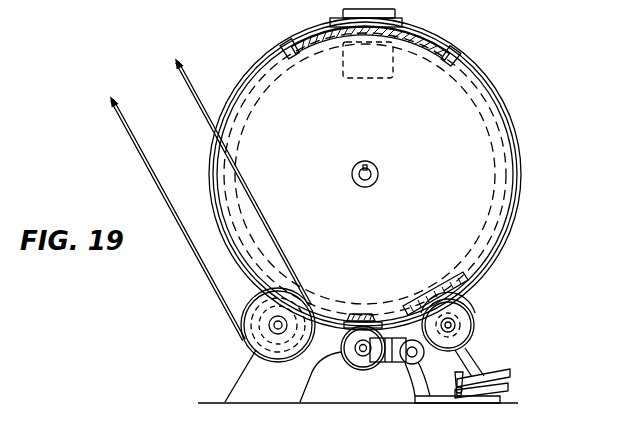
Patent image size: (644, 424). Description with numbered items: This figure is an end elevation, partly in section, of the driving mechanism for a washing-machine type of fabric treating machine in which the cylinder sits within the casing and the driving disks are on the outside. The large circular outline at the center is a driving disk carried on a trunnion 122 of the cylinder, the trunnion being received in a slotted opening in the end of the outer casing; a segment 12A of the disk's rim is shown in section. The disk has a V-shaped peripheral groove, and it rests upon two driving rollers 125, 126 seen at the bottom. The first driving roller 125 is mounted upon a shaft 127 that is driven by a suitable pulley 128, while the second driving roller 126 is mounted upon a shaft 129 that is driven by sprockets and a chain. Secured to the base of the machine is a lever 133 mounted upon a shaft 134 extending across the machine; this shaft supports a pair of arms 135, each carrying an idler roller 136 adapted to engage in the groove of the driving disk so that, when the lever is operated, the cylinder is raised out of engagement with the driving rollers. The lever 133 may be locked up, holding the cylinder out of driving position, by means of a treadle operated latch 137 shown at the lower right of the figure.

The brake band segment 12A is at (458, 300).
The trunnion 122 is at (378, 176).
The driving roller 125 is at (240, 339).
The driving roller 126 is at (470, 312).
The shaft 127 is at (275, 324).
The pulley 128 is at (244, 306).
The shaft 129 is at (472, 325).
The lever 133 is at (418, 402).
The shaft 134 is at (410, 362).
The arm 135 is at (360, 370).
The idler roller 136 is at (343, 358).
The treadle operated latch 137 is at (508, 381).